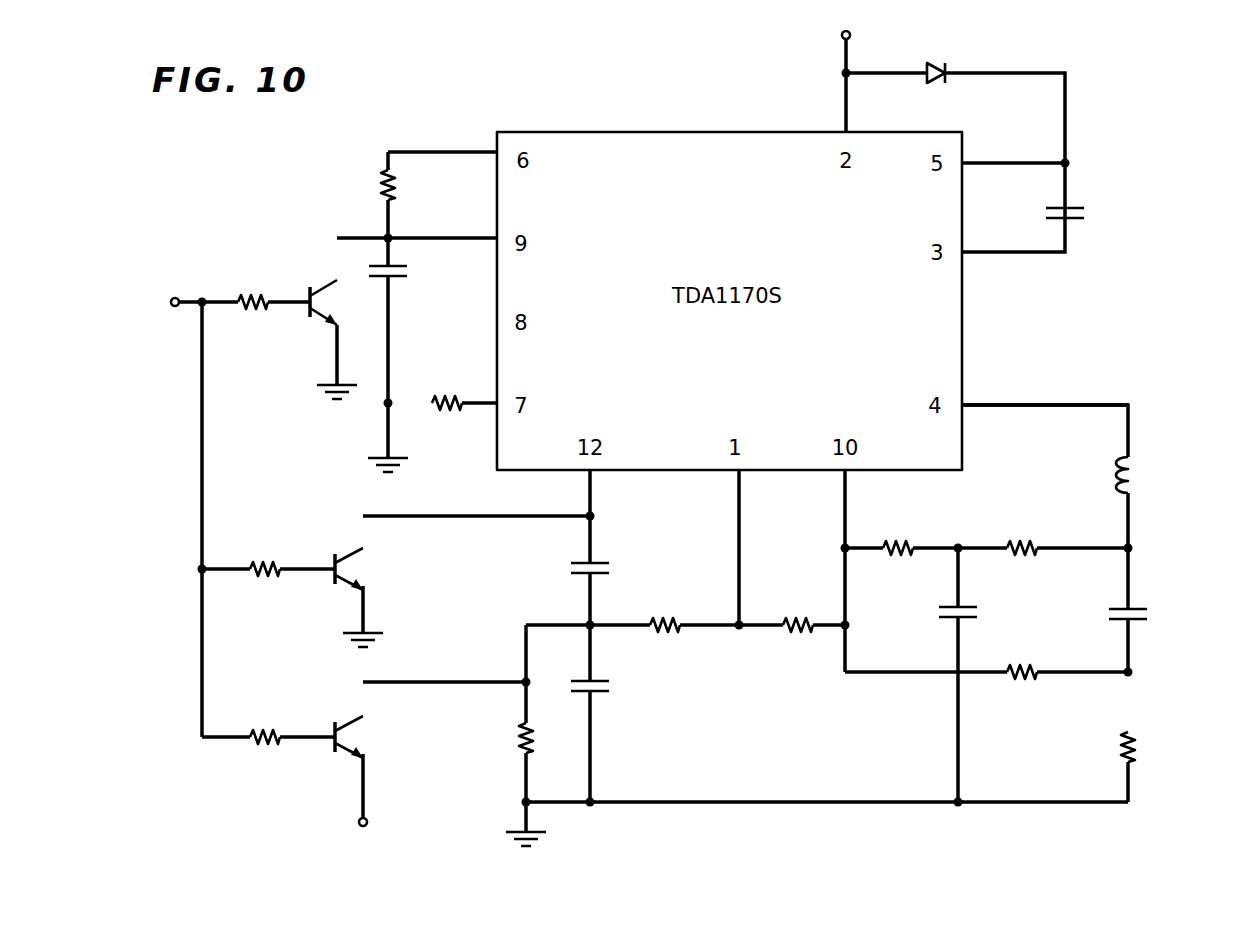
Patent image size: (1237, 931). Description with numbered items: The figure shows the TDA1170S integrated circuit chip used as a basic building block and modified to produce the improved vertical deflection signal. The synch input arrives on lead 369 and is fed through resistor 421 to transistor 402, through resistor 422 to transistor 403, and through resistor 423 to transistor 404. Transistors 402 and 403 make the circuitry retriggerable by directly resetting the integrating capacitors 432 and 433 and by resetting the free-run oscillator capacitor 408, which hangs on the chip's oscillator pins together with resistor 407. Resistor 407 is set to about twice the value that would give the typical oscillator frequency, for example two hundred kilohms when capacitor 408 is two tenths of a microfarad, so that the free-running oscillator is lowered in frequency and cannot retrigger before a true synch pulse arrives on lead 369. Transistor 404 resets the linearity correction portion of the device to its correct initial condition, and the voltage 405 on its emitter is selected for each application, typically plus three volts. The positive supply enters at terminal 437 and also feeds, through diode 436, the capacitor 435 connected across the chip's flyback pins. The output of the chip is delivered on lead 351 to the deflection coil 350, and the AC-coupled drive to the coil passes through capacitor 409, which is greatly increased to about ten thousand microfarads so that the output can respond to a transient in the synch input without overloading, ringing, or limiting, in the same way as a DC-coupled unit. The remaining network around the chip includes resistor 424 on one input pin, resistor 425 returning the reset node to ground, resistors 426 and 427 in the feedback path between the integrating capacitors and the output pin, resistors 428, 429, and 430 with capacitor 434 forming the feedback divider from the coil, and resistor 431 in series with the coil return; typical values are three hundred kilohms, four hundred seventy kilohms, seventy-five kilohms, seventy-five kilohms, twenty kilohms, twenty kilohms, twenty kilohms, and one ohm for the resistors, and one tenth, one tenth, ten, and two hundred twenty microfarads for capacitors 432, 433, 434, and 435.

The lead 369 is at (172, 296).
The resistor 421 is at (254, 296).
The transistor 402 is at (330, 290).
The resistor 407 is at (380, 188).
The capacitor 408 is at (407, 278).
The resistor 424 is at (446, 398).
The supply voltage terminal 437 is at (858, 22).
The diode 436 is at (935, 64).
The capacitor 435 is at (1082, 208).
The lead 351 is at (1044, 402).
The deflection coil 350 is at (1141, 456).
The resistor 428 is at (894, 542).
The resistor 429 is at (1018, 542).
The capacitor 434 is at (970, 608).
The capacitor 409 is at (1140, 612).
The resistor 430 is at (1018, 664).
The resistor 431 is at (1133, 736).
The integrating capacitor 432 is at (610, 562).
The resistor 426 is at (666, 616).
The resistor 427 is at (798, 620).
The integrating capacitor 433 is at (610, 694).
The resistor 425 is at (518, 740).
The resistor 422 is at (258, 562).
The transistor 403 is at (355, 565).
The resistor 423 is at (260, 732).
The transistor 404 is at (352, 734).
The voltage 405 is at (374, 828).